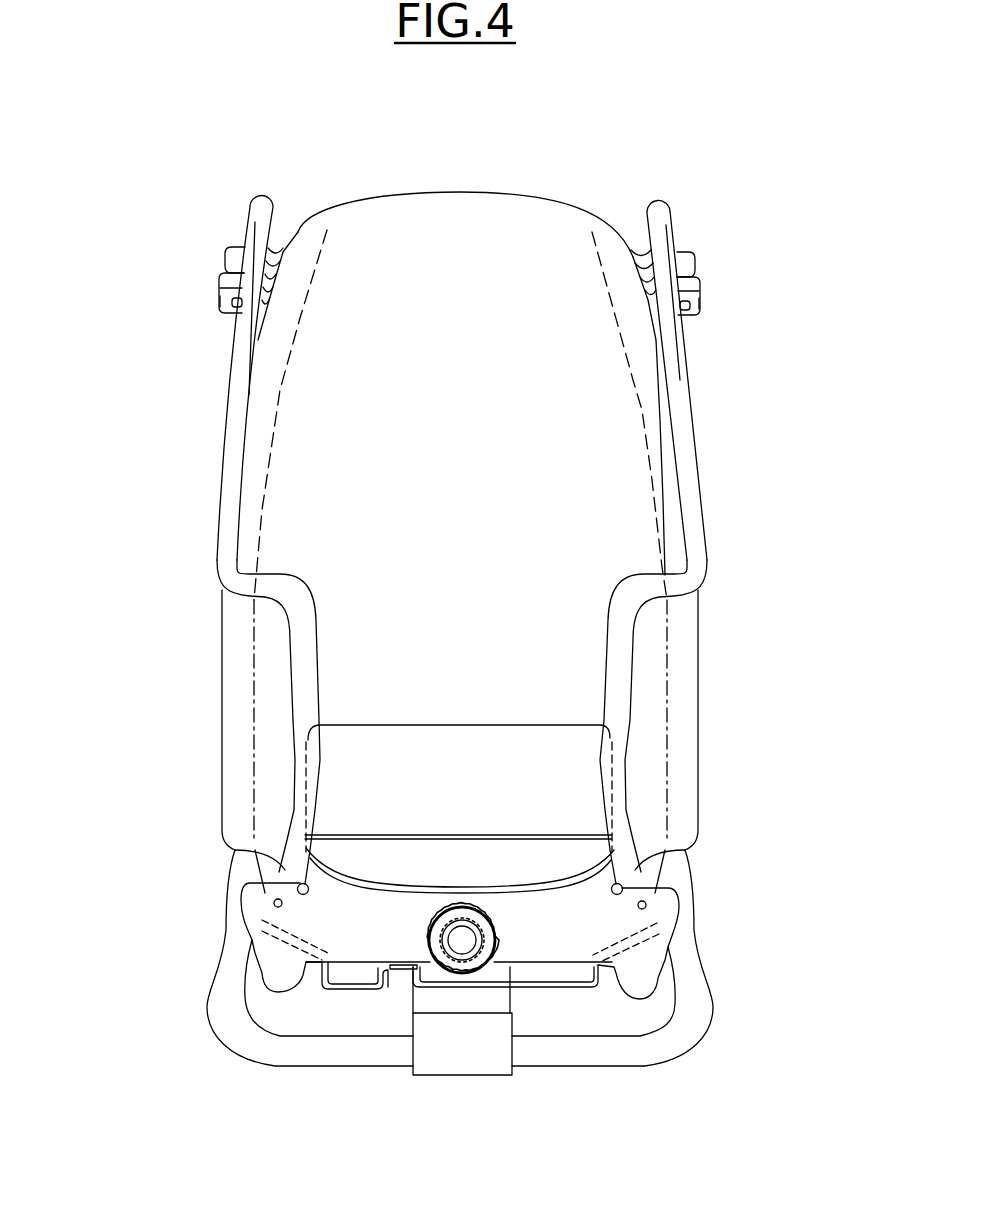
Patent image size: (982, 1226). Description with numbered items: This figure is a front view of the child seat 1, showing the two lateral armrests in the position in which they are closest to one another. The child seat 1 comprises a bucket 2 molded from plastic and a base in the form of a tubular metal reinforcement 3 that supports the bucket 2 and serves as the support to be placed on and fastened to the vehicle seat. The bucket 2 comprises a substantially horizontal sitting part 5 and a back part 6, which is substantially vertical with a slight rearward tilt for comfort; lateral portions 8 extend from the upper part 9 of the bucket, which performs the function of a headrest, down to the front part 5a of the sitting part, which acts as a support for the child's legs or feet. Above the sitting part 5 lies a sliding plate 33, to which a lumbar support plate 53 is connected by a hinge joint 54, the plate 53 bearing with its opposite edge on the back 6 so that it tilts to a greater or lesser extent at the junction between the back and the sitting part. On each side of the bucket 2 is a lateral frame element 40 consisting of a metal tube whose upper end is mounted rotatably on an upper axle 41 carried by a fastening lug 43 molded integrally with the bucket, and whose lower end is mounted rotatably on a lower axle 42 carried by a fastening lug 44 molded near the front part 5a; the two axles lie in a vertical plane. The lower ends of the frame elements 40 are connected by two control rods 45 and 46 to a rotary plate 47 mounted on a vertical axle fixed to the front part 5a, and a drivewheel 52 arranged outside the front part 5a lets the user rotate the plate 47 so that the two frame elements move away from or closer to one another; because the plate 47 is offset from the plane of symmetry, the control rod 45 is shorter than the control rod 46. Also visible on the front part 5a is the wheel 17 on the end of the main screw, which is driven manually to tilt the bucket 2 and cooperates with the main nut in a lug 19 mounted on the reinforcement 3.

The child seat 1 is at (371, 172).
The bucket 2 is at (469, 180).
The upper part 9 is at (524, 196).
The back part 6 is at (498, 476).
The lateral frame element 40 is at (207, 530).
The fastening lug 43 is at (233, 280).
The upper axle 41 is at (233, 308).
The lateral portion 8 is at (237, 652).
The plate 53 is at (370, 782).
The hinge joint 54 is at (357, 833).
The sliding plate 33 is at (523, 860).
The sitting part 5 is at (538, 932).
The lower axle 42 is at (270, 900).
The fastening lug 44 is at (258, 935).
The tubular metal reinforcement 3 is at (718, 1033).
The control rod 45 is at (380, 920).
The front part 5a is at (338, 983).
The rotary plate 47 is at (405, 973).
The drivewheel 52 is at (462, 940).
The wheel 17 is at (473, 946).
The lug 19 is at (500, 1045).
The control rod 46 is at (562, 983).